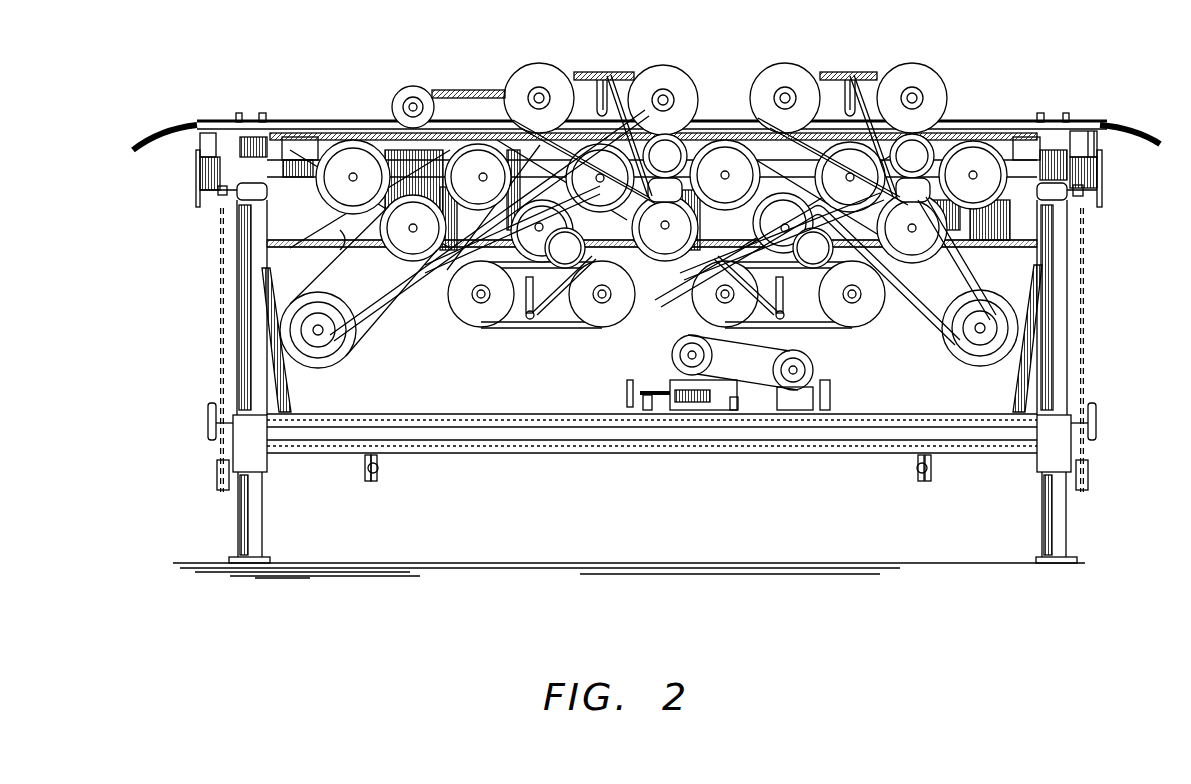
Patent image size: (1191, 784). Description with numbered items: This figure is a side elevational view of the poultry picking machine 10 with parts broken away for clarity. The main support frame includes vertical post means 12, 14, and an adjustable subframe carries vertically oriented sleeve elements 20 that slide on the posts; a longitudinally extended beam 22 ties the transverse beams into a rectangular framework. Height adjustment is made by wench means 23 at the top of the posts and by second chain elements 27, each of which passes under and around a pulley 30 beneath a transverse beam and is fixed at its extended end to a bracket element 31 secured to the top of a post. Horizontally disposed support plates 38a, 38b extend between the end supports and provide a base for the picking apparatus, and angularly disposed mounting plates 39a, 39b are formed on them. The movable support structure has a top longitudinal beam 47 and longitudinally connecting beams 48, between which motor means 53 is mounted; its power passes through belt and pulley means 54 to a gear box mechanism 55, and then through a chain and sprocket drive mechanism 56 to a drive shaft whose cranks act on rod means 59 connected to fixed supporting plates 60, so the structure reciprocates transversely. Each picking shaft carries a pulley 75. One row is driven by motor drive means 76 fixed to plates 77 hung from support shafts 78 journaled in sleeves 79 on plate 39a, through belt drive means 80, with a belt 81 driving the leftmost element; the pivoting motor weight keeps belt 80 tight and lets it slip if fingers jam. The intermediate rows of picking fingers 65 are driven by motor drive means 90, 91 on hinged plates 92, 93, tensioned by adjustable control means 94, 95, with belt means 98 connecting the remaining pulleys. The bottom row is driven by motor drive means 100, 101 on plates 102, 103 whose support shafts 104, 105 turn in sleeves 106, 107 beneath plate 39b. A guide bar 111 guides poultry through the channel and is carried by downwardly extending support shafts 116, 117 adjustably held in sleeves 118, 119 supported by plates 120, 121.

The apparatus 10 is at (262, 552).
The post means 12 is at (262, 500).
The post means 14 is at (1042, 500).
The sleeve element 20 is at (258, 466).
The longitudinally extended beam 22 is at (624, 444).
The wench means 23 is at (264, 113).
The second chain element 27 is at (220, 298).
The pulley 30 is at (215, 476).
The bracket element 31 is at (221, 195).
The support plate 38a is at (314, 170).
The support plate 38b is at (330, 248).
The mounting plate 39a is at (376, 132).
The mounting plate 39b is at (452, 250).
The top longitudinal beam 47 is at (278, 170).
The longitudinally connecting beam 48 is at (416, 414).
The motor means 53 is at (664, 382).
The belt and pulley means 54 is at (800, 352).
The gear box mechanism 55 is at (790, 410).
The chain and sprocket drive mechanism 56 is at (832, 396).
The rod means 59 is at (365, 478).
The fixed supporting plate 60 is at (378, 478).
The row of picking fingers 65 is at (388, 266).
The pulley 75 is at (405, 96).
The motor drive means 76 is at (788, 168).
The plate 77 is at (668, 115).
The support shaft 78 is at (614, 76).
The sleeve 79 is at (600, 78).
The belt drive means 80 is at (638, 72).
The belt 81 is at (478, 90).
The motor drive means 90 is at (350, 366).
The motor drive means 91 is at (952, 362).
The plate 92 is at (284, 402).
The plate 93 is at (1022, 383).
The adjustable control means 94 is at (208, 420).
The adjustable control means 95 is at (1094, 408).
The belt means 98 is at (340, 250).
The motor drive means 100 is at (567, 248).
The motor drive means 101 is at (816, 248).
The plate 102 is at (540, 318).
The plate 103 is at (790, 316).
The support shaft 104 is at (524, 318).
The support shaft 105 is at (786, 318).
The sleeve 106 is at (525, 294).
The sleeve 107 is at (772, 294).
The guide bar 111 is at (142, 134).
The support shaft 116 is at (200, 140).
The support shaft 117 is at (1104, 143).
The sleeve 118 is at (198, 190).
The sleeve 119 is at (1102, 195).
The plate 120 is at (200, 172).
The plate 121 is at (1092, 165).